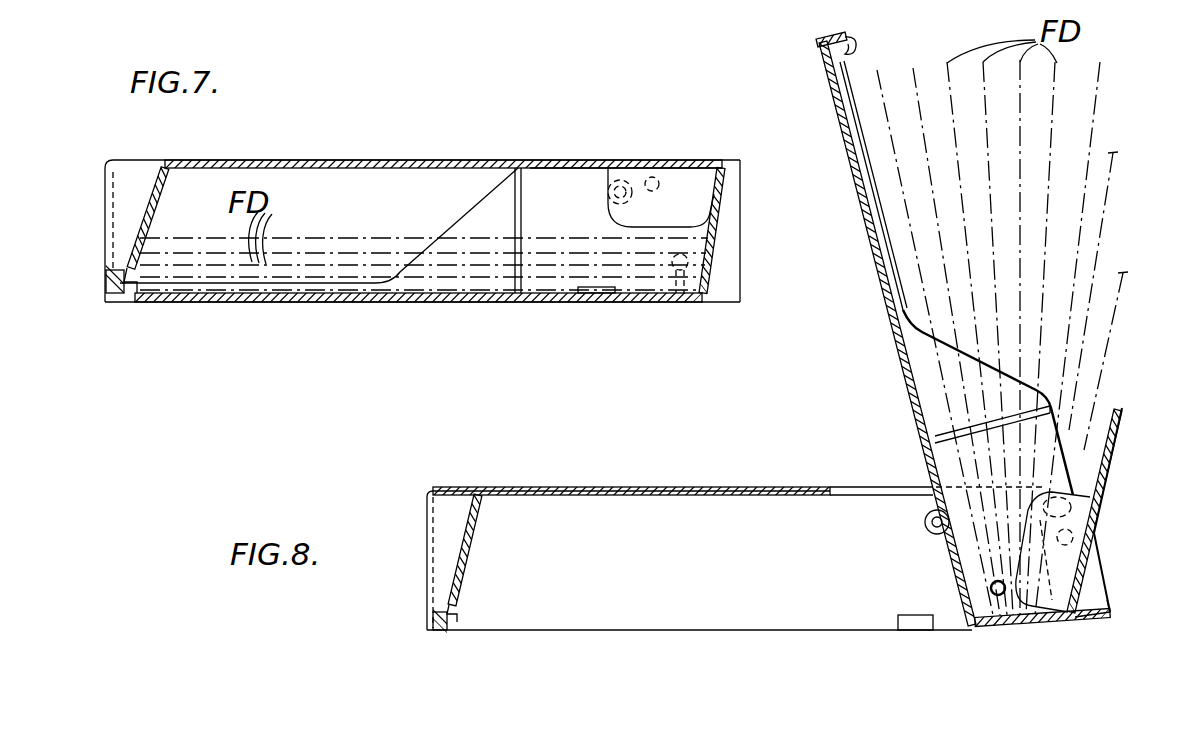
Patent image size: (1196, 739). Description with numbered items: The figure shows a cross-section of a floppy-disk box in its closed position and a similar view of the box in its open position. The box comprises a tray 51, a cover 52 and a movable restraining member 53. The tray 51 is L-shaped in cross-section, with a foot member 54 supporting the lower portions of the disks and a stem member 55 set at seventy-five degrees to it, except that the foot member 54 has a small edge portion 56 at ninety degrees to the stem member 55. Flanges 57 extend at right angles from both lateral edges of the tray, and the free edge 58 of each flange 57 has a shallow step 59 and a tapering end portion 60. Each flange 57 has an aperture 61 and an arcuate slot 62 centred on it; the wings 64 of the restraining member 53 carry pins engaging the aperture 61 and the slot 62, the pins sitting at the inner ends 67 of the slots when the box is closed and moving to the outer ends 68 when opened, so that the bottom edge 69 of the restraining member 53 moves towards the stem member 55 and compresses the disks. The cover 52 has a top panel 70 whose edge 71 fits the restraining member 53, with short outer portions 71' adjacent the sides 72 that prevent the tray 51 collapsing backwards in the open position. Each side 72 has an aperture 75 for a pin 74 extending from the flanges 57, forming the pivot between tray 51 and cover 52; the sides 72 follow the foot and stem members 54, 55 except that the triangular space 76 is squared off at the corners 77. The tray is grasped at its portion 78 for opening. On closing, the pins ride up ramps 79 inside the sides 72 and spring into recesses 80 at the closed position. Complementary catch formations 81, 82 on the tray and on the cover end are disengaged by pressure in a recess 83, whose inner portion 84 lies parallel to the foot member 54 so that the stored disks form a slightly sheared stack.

In FIG. 7, the tray 51 is at (530, 307).
In FIG. 8, the tray 51 is at (884, 316).
In FIG. 7, the cover 52 is at (402, 158).
In FIG. 8, the cover 52 is at (543, 492).
In FIG. 7, the restraining member 53 is at (566, 158).
In FIG. 8, the restraining member 53 is at (1109, 516).
In FIG. 7, the foot member 54 is at (727, 247).
In FIG. 8, the foot member 54 is at (1028, 627).
In FIG. 7, the stem member 55 is at (622, 298).
In FIG. 8, the stem member 55 is at (903, 357).
In FIG. 7, the edge portion 56 is at (736, 170).
In FIG. 8, the edge portion 56 is at (1090, 632).
In FIG. 8, the flange 57 is at (1087, 593).
In FIG. 8, the free edge 58 is at (1085, 577).
In FIG. 8, the shallow step 59 is at (1063, 443).
In FIG. 8, the tapering end portion 60 is at (1033, 374).
In FIG. 7, the aperture 61 is at (660, 178).
In FIG. 8, the aperture 61 is at (1080, 549).
In FIG. 7, the arcuate slot 62 is at (622, 178).
In FIG. 8, the arcuate slot 62 is at (1063, 500).
In FIG. 7, the wing 64 is at (708, 192).
In FIG. 8, the wing 64 is at (1020, 550).
In FIG. 7, the inner end 67 is at (596, 197).
In FIG. 8, the outer end 68 is at (1070, 520).
In FIG. 8, the bottom edge 69 is at (1095, 612).
In FIG. 7, the top panel 70 is at (350, 162).
In FIG. 7, the edge 71 is at (497, 207).
In FIG. 8, the edge 71 is at (845, 468).
In FIG. 8, the outer portion 71' is at (947, 444).
In FIG. 8, the side 72 is at (623, 605).
In FIG. 7, the pin 74 is at (683, 300).
In FIG. 7, the aperture 75 is at (688, 300).
In FIG. 8, the aperture 75 is at (958, 597).
In FIG. 7, the triangular space 76 is at (748, 274).
In FIG. 7, the corner 77 is at (742, 297).
In FIG. 7, the portion 78 is at (620, 305).
In FIG. 8, the ramp 79 is at (900, 632).
In FIG. 7, the recess 80 is at (603, 194).
In FIG. 8, the recess 80 is at (922, 522).
In FIG. 8, the catch formation 81 is at (435, 616).
In FIG. 8, the catch formation 82 is at (857, 47).
In FIG. 8, the recess 83 is at (457, 525).
In FIG. 7, the inner portion 84 is at (160, 207).
In FIG. 8, the inner portion 84 is at (470, 562).